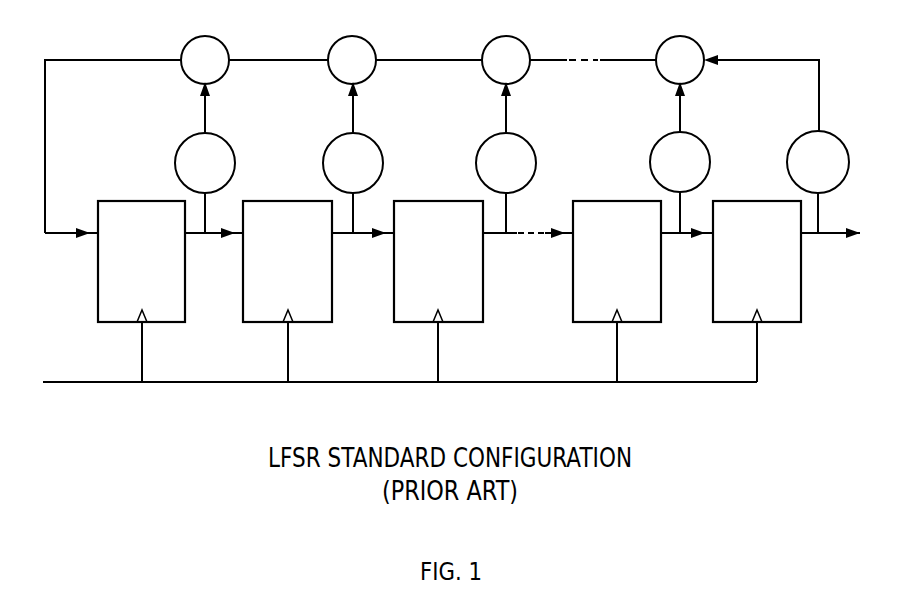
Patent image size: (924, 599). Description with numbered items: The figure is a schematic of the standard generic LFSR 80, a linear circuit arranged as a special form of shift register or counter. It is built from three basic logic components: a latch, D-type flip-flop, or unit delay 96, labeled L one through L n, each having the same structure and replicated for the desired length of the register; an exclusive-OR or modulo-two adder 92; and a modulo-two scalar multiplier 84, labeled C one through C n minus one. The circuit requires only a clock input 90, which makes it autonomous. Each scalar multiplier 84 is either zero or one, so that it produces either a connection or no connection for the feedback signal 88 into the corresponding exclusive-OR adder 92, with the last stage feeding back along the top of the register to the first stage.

The standard generic LFSR 80 is at (138, 442).
The modulo-2 scalar multiplier 84 is at (214, 144).
The feedback signal 88 is at (748, 60).
The clock input 90 is at (172, 382).
The exclusive-OR (XOR) or modulo-2 adder 92 is at (217, 77).
The latch or D-type flip-flop or unit delay 96 is at (171, 308).